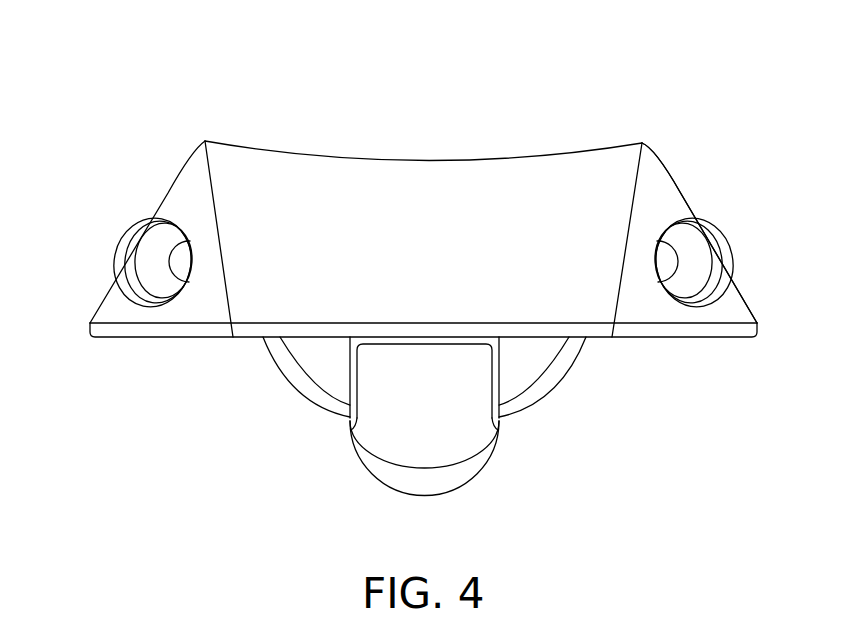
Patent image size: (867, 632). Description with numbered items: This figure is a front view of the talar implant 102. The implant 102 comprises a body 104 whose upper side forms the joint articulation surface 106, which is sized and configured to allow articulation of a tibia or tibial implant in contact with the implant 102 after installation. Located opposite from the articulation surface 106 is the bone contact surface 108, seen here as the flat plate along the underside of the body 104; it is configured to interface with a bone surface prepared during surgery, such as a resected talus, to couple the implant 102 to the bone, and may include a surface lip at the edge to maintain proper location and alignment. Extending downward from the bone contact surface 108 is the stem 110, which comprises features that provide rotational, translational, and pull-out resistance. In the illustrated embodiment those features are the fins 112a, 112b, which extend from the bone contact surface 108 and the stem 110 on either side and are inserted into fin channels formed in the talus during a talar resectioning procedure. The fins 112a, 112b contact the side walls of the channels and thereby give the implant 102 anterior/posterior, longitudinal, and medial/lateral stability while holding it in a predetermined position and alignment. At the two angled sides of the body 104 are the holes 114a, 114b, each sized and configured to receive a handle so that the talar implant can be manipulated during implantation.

The implant 102 is at (660, 108).
The body 104 is at (697, 207).
The articulation surface 106 is at (428, 170).
The bone contact surface 108 is at (642, 340).
The stem 110 is at (480, 465).
The fin 112a is at (543, 377).
The fin 112b is at (283, 367).
The hole 114a is at (697, 263).
The hole 114b is at (150, 255).